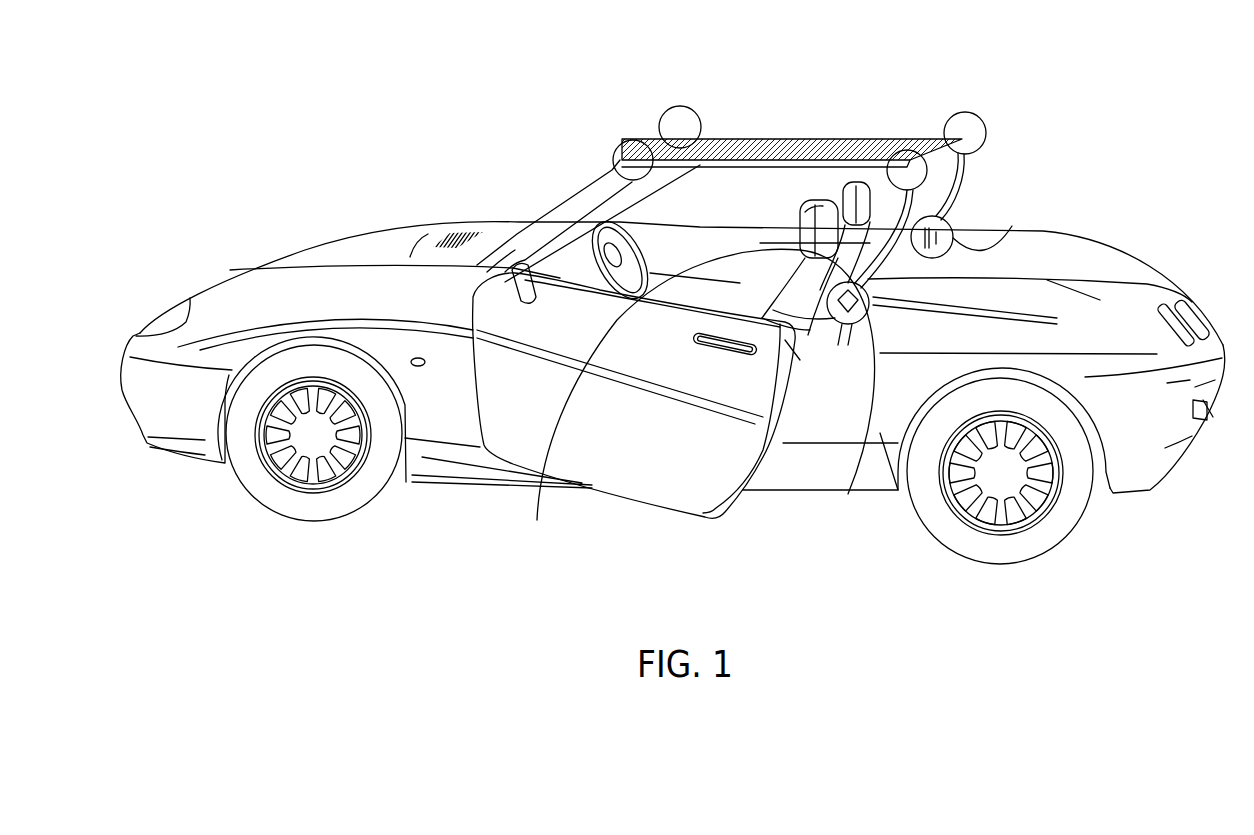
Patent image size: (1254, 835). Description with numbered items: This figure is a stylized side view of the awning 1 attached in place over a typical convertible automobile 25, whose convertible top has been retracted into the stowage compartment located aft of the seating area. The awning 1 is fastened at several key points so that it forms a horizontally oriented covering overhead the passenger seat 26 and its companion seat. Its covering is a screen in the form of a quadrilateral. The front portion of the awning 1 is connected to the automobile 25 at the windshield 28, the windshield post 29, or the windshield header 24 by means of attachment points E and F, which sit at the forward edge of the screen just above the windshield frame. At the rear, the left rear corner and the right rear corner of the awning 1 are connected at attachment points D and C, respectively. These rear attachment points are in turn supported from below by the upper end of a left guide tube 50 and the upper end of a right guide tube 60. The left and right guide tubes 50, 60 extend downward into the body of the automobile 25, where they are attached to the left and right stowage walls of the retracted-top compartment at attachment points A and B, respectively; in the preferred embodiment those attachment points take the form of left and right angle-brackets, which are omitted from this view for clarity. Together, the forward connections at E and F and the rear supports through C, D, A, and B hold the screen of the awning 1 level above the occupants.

The awning 1 is at (802, 126).
The windshield header 24 is at (650, 138).
The convertible automobile 25 is at (362, 248).
The passenger seat 26 is at (540, 495).
The windshield 28 is at (598, 193).
The windshield post 29 is at (520, 230).
The left guide tube 50 is at (858, 252).
The right guide tube 60 is at (968, 173).
The attachment point A is at (848, 494).
The attachment point B is at (977, 280).
The attachment point C is at (953, 112).
The attachment point D is at (937, 213).
The attachment point E is at (620, 145).
The attachment point F is at (680, 105).